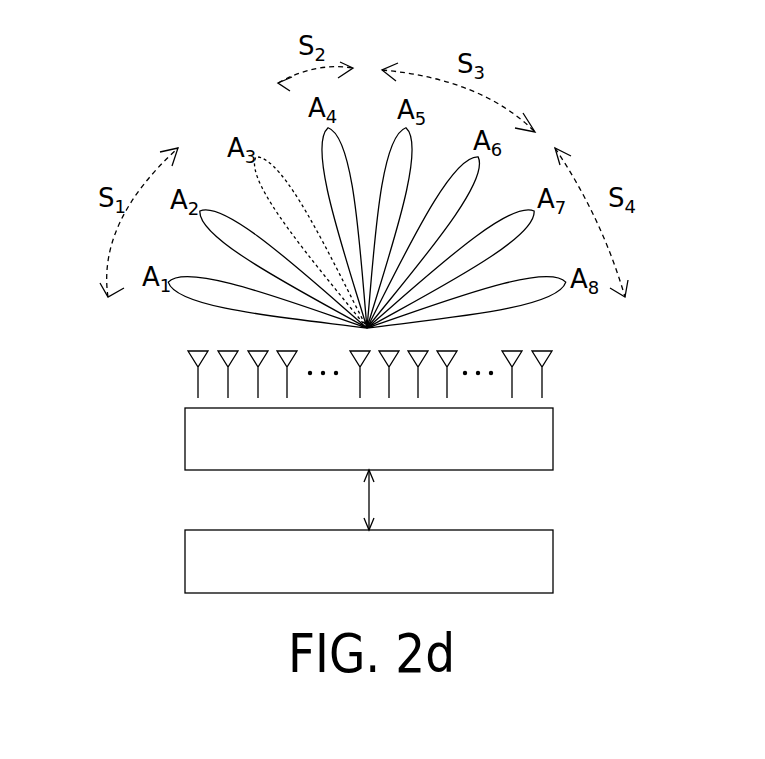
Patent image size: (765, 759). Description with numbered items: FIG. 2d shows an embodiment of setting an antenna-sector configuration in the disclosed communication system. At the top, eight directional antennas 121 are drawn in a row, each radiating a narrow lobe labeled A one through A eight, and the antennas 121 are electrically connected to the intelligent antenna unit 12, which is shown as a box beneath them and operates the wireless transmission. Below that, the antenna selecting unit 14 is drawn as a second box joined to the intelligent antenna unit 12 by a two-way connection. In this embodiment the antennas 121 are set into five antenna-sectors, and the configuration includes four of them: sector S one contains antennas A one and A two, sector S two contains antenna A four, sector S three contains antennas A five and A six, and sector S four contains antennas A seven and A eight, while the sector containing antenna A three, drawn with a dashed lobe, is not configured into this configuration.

The antennas 121 is at (168, 370).
The intelligent antenna unit 12 is at (185, 437).
The antenna selecting unit 14 is at (185, 559).